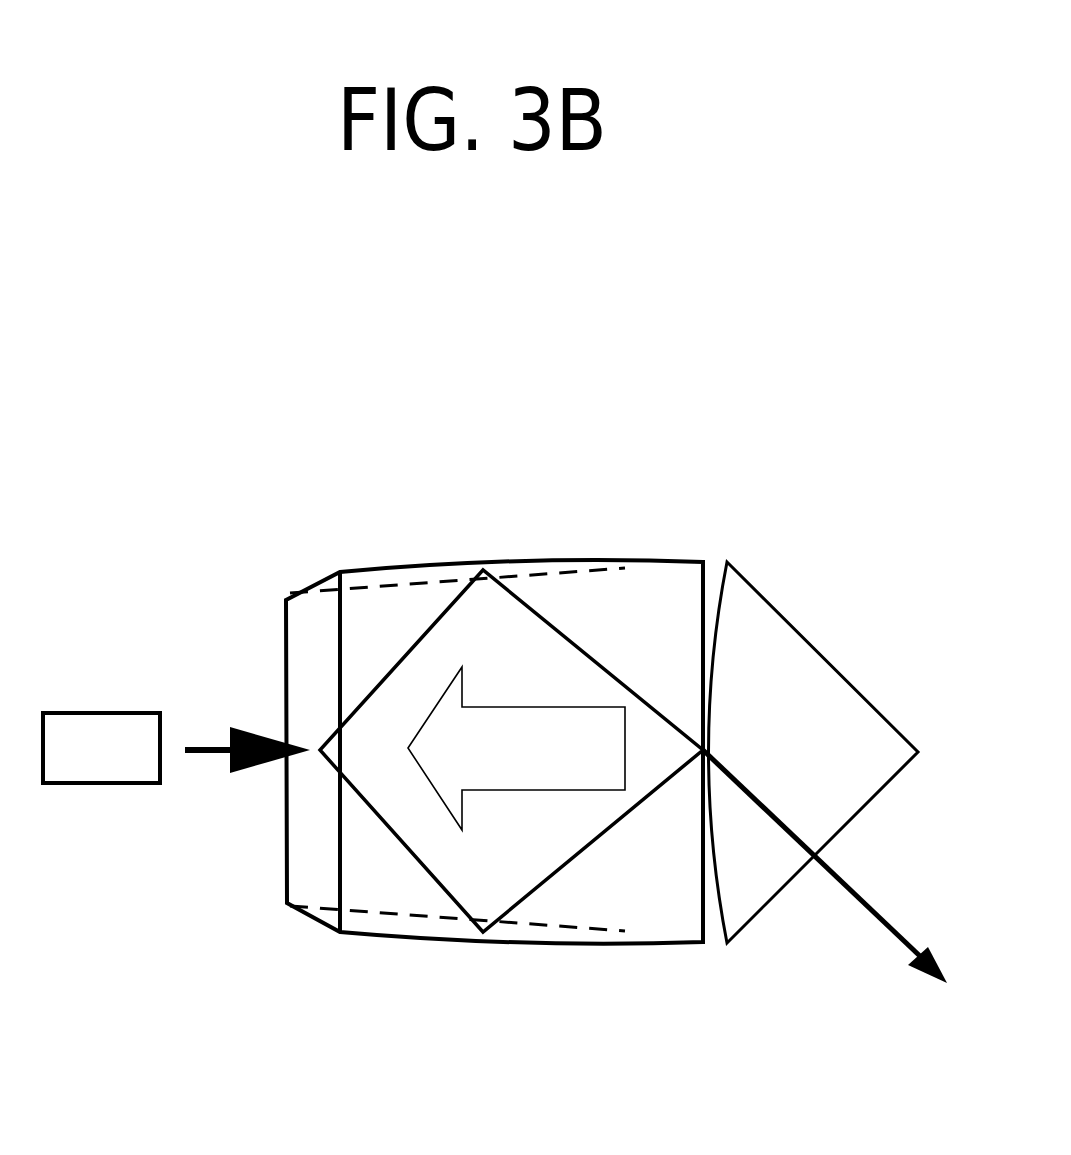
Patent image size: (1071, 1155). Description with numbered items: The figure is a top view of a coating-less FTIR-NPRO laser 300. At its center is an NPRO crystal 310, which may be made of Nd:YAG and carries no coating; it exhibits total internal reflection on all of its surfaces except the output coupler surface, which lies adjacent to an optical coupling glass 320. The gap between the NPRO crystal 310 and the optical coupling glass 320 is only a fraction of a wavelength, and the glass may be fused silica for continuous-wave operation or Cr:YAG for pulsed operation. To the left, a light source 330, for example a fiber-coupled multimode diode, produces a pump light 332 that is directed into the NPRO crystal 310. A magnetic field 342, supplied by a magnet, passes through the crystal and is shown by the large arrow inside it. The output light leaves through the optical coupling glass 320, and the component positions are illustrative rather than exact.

The coating-less FTIR-NPRO laser 300 is at (120, 186).
The NPRO crystal 310 is at (378, 610).
The optical coupling glass 320 is at (820, 730).
The light source 330 is at (100, 713).
The pump light 332 is at (260, 730).
The magnetic field 342 is at (518, 735).